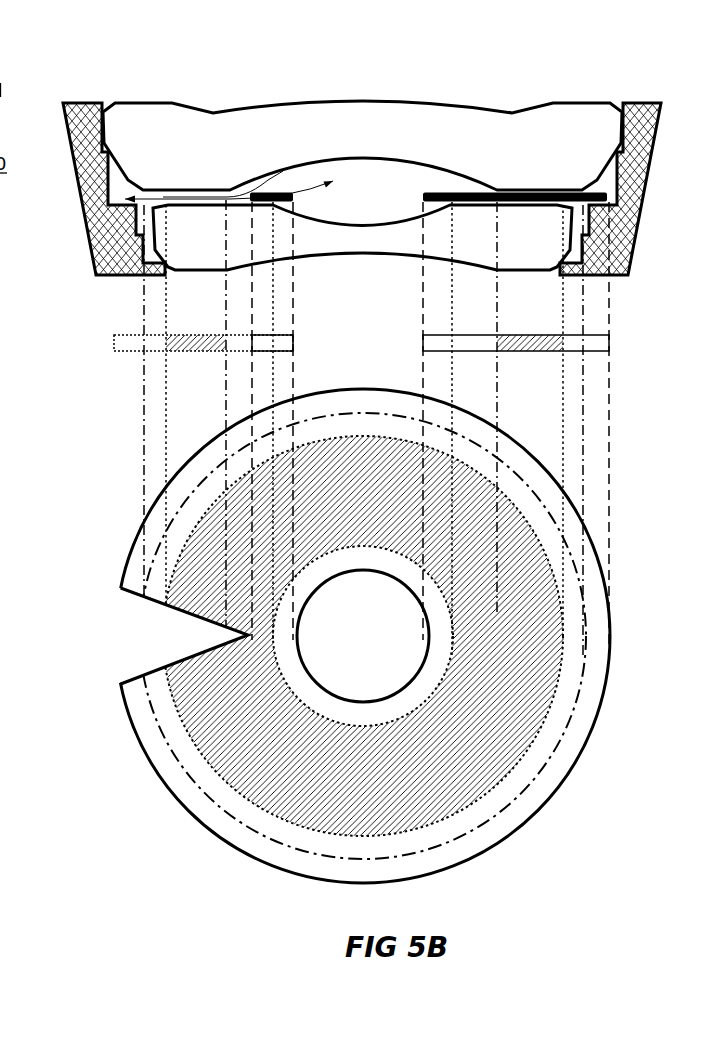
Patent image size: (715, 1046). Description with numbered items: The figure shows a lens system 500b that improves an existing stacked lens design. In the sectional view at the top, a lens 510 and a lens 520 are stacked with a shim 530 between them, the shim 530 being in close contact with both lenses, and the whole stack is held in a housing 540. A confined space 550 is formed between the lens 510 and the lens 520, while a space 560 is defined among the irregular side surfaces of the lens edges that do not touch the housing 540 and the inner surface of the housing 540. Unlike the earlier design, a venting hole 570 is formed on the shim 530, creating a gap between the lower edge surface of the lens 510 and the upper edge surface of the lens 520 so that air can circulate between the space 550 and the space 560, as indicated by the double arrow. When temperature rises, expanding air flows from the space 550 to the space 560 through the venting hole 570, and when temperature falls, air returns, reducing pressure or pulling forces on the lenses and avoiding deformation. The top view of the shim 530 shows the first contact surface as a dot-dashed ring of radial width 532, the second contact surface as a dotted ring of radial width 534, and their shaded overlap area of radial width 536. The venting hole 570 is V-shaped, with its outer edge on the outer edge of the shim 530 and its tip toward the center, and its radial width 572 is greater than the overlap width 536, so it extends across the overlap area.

The lens system 500b is at (497, 92).
The lens 510 is at (380, 145).
The lens 520 is at (380, 251).
The shim 530 is at (270, 193).
The housing 540 is at (87, 102).
The confined space 550 is at (380, 204).
The space 560 is at (118, 182).
The venting hole 570 is at (197, 193).
The radial width of the first contact surface 532 is at (226, 299).
The radial width of the second contact surface 534 is at (273, 319).
The radial width of the overlap area 536 is at (226, 373).
The radial width of the venting hole 572 is at (247, 622).